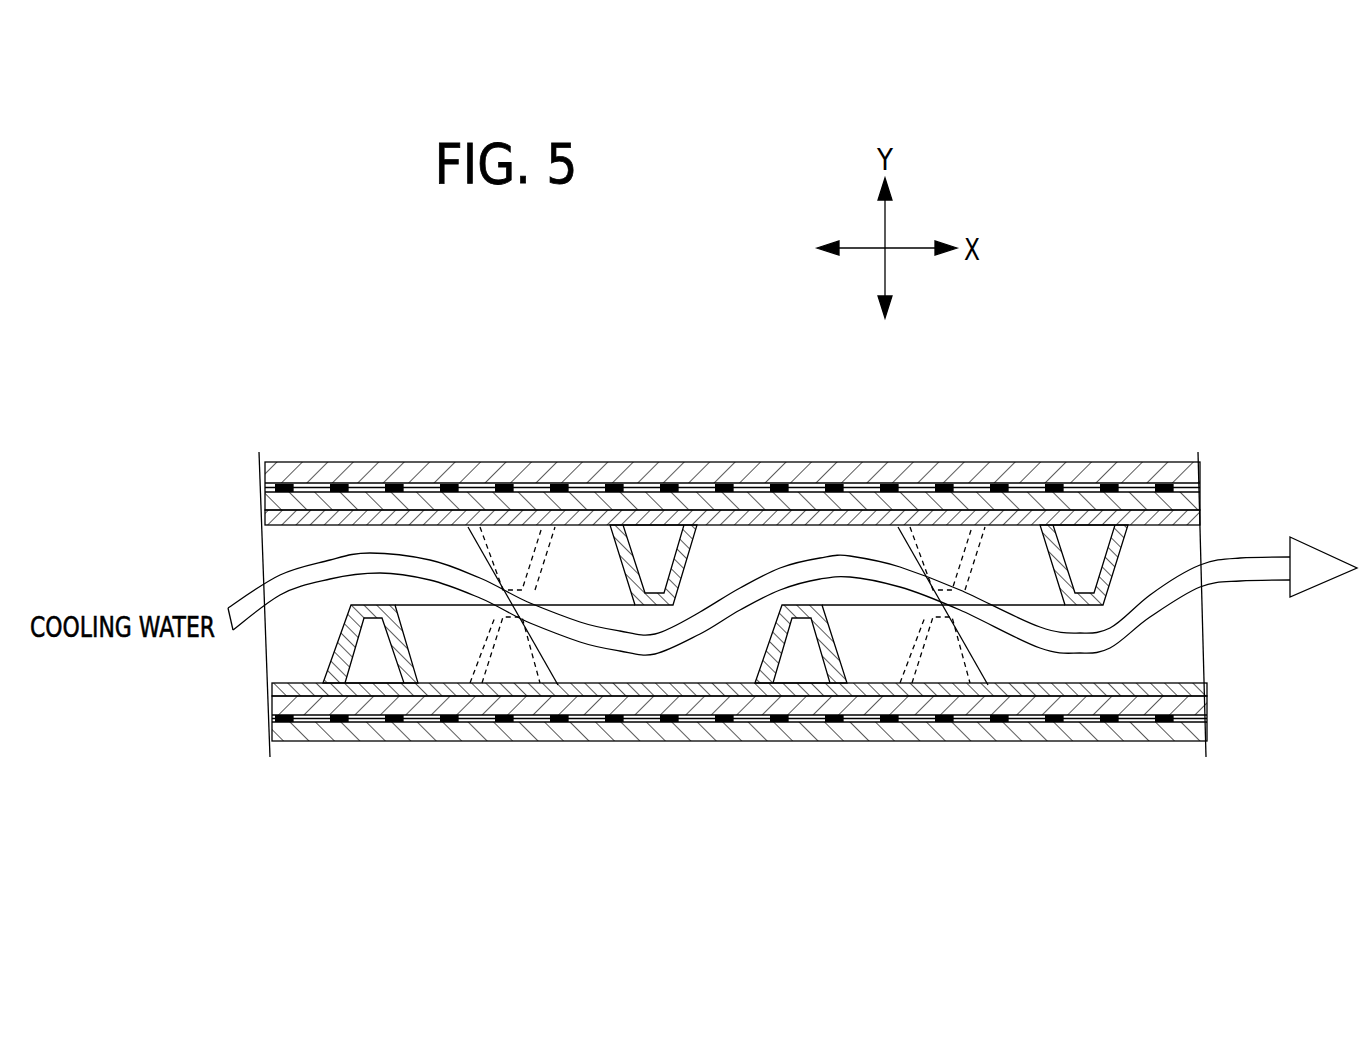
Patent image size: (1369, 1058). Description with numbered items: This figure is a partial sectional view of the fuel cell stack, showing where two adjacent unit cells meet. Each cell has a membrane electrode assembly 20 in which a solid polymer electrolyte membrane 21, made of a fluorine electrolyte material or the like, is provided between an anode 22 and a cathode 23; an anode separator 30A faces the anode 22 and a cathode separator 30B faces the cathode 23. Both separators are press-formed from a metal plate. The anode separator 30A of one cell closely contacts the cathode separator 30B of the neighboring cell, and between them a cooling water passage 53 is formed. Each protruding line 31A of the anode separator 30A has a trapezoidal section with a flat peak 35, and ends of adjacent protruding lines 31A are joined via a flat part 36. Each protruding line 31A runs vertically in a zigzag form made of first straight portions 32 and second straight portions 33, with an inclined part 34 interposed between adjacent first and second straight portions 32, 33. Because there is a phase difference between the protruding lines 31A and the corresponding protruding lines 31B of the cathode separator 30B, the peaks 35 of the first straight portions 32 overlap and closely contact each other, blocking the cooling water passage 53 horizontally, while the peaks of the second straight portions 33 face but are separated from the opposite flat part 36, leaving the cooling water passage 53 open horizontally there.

The membrane electrode assembly 20 is at (1296, 400).
The solid polymer electrolyte membrane 21 is at (1205, 492).
The anode 22 is at (1205, 470).
The cathode 23 is at (1205, 508).
The anode separator 30A is at (290, 680).
The cathode separator 30B is at (290, 527).
The protruding line 31A is at (350, 662).
The protruding line 31B is at (698, 555).
The first straight portion 32 is at (473, 546).
The second straight portion 33 is at (1160, 532).
The inclined part 34 is at (1008, 547).
The flat peak 35 is at (800, 605).
The flat part 36 is at (558, 527).
The cooling water passage 53 is at (1175, 647).